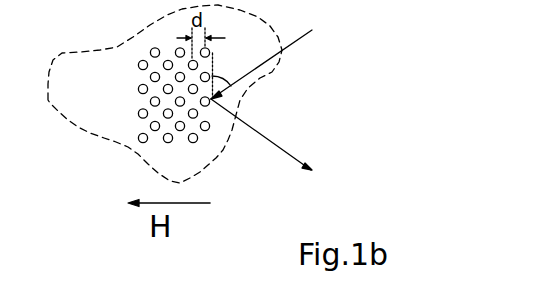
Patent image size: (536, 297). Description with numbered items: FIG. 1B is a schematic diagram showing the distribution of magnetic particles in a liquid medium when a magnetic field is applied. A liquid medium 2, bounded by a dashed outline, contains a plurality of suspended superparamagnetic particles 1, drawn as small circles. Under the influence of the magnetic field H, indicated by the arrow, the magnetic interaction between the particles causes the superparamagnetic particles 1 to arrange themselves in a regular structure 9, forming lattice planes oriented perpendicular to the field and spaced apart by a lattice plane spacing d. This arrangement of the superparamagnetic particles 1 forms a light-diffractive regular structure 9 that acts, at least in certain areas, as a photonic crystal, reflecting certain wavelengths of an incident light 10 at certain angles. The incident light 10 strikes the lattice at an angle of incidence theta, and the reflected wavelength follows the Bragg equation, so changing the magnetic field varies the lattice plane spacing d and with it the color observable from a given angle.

The superparamagnetic particles 1 is at (197, 142).
The liquid medium 2 is at (73, 109).
The regular structure 9 is at (125, 74).
The incident light 10 is at (275, 100).